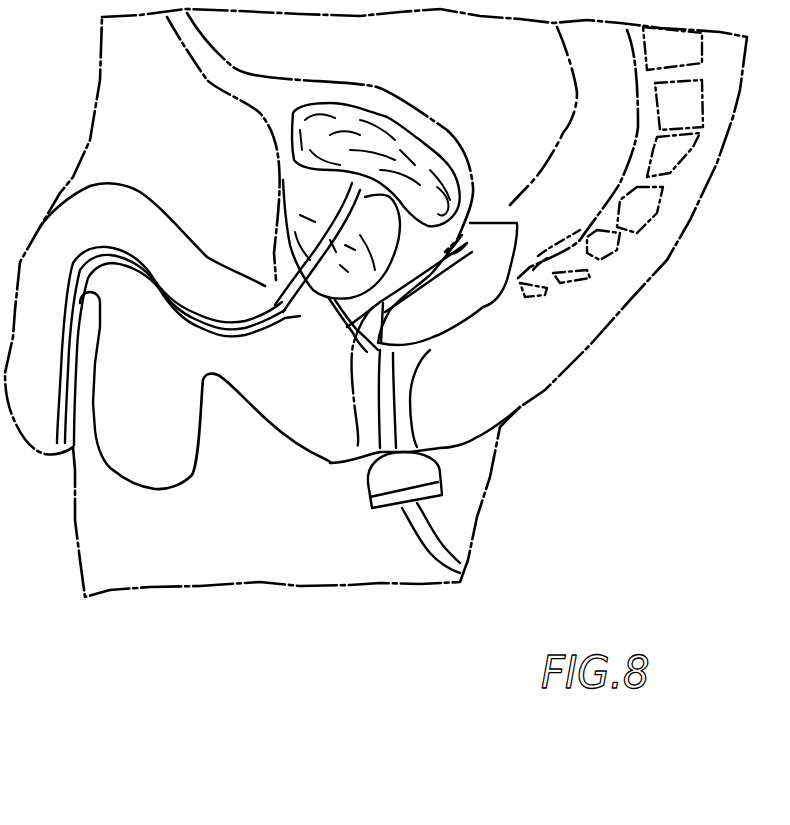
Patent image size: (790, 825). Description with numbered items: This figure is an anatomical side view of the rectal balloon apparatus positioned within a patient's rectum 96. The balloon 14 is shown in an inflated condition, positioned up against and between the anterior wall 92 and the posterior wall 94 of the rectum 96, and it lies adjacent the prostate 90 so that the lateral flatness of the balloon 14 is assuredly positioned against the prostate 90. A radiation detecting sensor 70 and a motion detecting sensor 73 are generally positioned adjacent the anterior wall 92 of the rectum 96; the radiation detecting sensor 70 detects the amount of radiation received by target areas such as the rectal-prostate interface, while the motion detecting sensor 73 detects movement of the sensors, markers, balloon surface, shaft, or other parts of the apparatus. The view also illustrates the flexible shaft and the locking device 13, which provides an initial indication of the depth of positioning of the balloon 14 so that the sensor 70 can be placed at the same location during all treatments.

The locking device 13 is at (373, 490).
The balloon 14 is at (470, 235).
The radiation detecting sensor 70 is at (437, 300).
The motion detecting sensor 73 is at (450, 250).
The prostate 90 is at (310, 300).
The anterior wall 92 is at (362, 312).
The posterior wall 94 is at (503, 287).
The rectum 96 is at (352, 373).